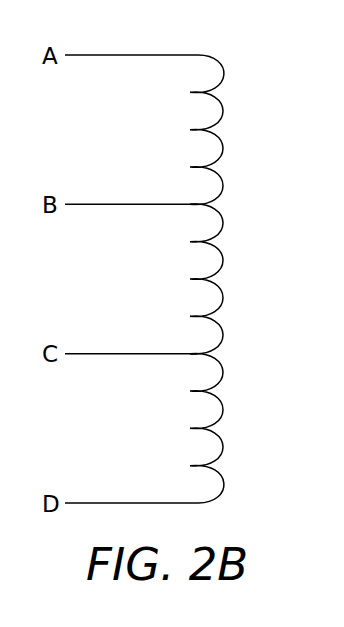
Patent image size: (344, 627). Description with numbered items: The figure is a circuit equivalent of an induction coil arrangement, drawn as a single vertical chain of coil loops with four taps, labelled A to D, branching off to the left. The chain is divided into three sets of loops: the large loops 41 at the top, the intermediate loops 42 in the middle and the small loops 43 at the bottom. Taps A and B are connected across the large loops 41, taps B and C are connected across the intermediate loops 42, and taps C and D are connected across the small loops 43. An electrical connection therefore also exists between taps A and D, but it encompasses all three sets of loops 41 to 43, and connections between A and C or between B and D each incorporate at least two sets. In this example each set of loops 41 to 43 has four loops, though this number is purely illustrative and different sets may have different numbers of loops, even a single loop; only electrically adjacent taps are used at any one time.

The large loops 41 is at (222, 149).
The intermediate loops 42 is at (222, 299).
The small loops 43 is at (222, 448).